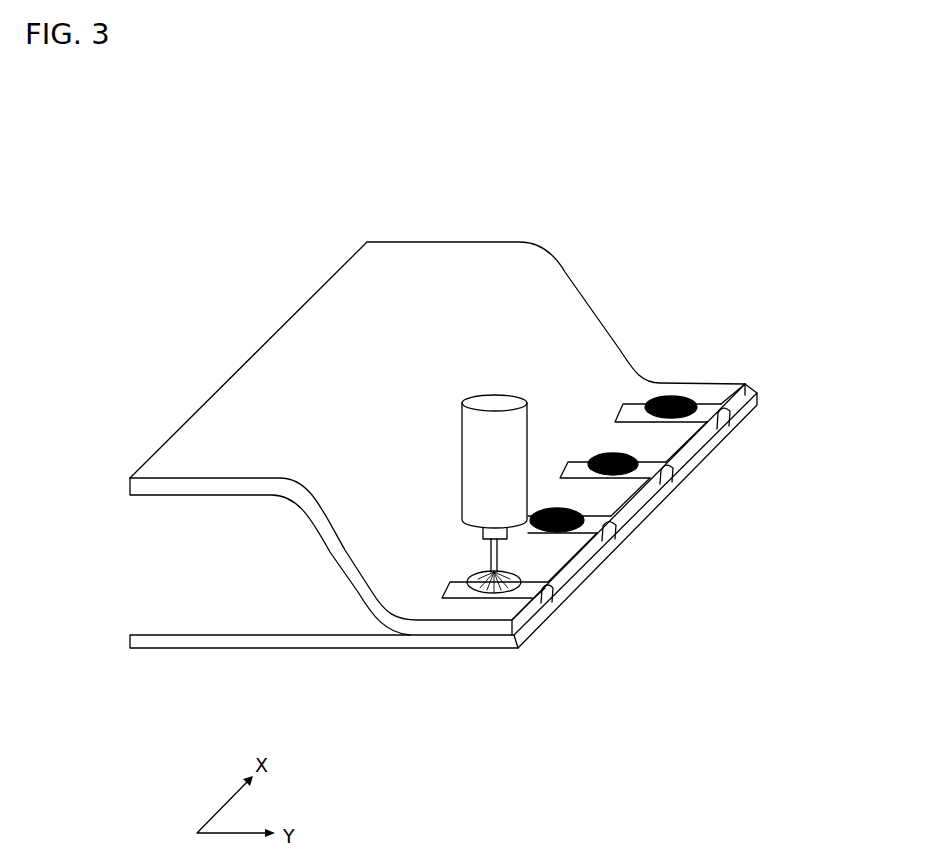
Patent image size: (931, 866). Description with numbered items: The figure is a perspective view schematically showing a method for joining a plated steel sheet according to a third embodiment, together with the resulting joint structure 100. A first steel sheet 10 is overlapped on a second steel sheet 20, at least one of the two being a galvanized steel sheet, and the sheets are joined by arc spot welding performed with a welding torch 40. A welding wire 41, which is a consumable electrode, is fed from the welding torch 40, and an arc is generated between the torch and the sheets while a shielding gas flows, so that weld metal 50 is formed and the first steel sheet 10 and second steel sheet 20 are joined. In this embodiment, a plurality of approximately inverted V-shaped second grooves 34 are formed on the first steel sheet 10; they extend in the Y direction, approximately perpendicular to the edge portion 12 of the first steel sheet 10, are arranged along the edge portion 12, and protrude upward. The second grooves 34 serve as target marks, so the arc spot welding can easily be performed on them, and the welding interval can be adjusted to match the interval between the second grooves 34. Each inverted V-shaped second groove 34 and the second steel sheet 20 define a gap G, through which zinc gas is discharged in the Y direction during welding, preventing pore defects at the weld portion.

The joint structure 100 is at (440, 399).
The first steel sheet 10 is at (220, 425).
The second steel sheet 20 is at (185, 613).
The edge portion 12 is at (528, 627).
The second groove 34 is at (668, 482).
The gap G is at (550, 602).
The welding torch 40 is at (497, 452).
The welding wire 41 is at (480, 555).
The weld metal 50 is at (480, 587).